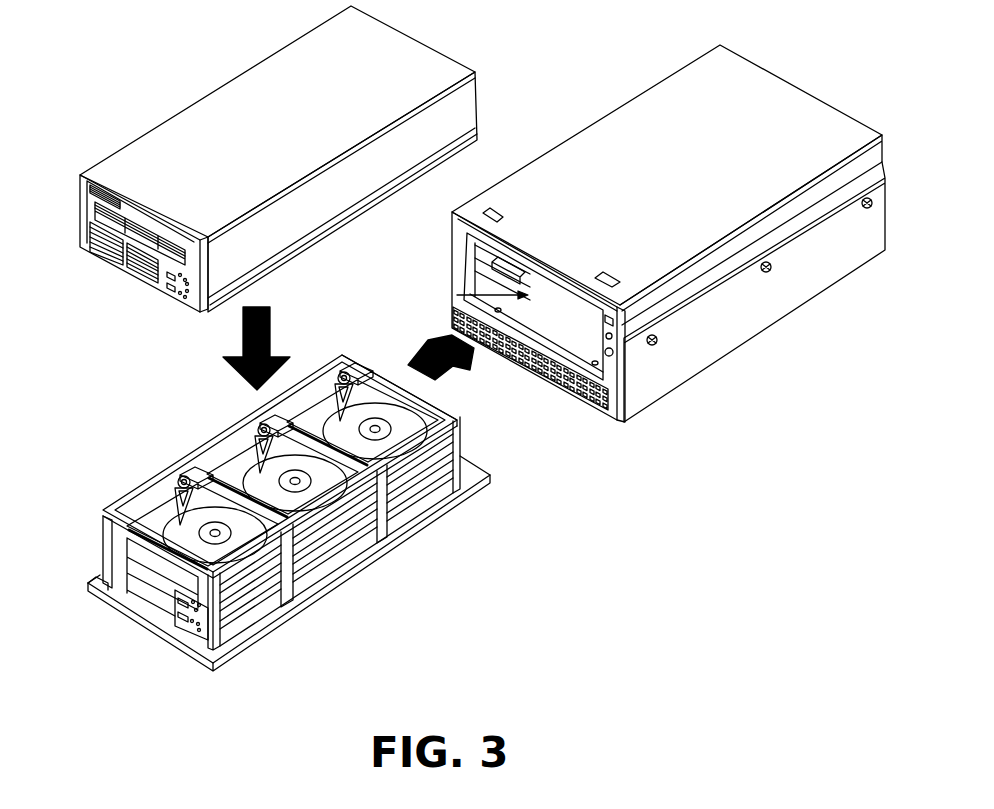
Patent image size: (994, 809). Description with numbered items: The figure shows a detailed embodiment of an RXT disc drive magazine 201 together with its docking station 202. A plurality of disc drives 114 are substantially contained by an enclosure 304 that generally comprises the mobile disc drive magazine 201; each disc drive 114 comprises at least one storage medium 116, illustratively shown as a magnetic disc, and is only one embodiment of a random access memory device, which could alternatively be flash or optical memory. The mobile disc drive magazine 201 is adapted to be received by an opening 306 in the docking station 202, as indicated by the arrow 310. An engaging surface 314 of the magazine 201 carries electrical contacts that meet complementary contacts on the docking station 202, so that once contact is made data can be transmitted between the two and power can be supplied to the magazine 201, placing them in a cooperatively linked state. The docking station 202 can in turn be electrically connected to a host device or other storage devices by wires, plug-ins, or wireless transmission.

The mobile disc drive magazine 201 is at (110, 505).
The docking station 202 is at (598, 120).
The enclosure 304 is at (225, 82).
The opening 306 is at (457, 295).
The disc drive 114 is at (168, 478).
The storage medium 116 is at (385, 405).
The arrow 310 is at (450, 376).
The engaging surface 314 is at (430, 406).